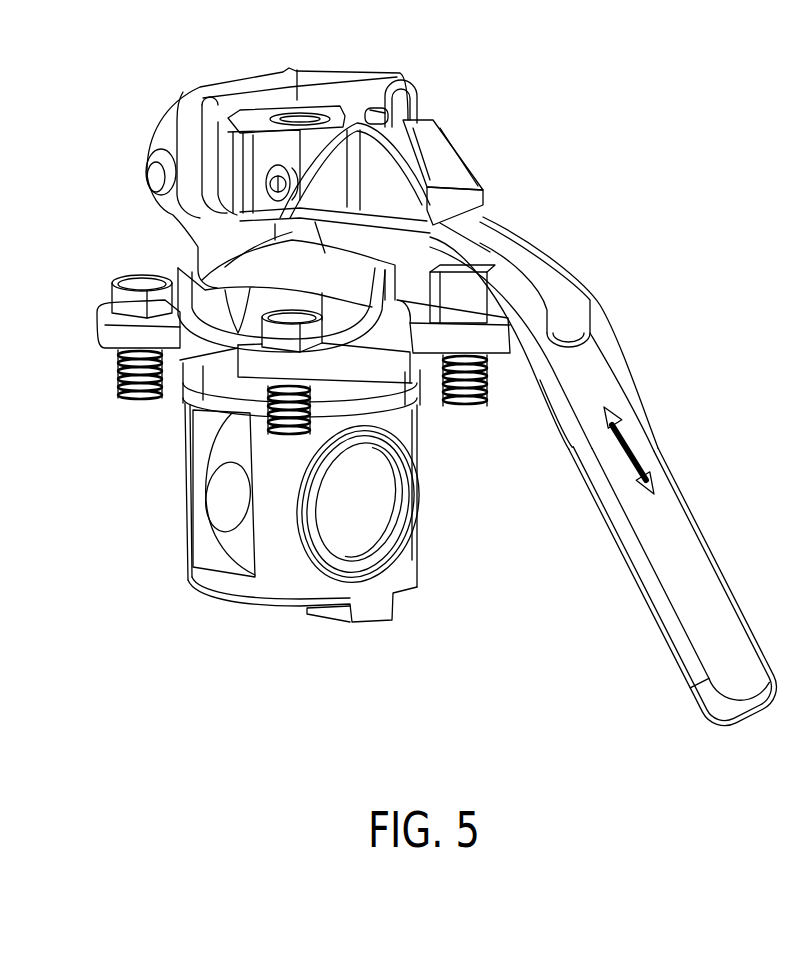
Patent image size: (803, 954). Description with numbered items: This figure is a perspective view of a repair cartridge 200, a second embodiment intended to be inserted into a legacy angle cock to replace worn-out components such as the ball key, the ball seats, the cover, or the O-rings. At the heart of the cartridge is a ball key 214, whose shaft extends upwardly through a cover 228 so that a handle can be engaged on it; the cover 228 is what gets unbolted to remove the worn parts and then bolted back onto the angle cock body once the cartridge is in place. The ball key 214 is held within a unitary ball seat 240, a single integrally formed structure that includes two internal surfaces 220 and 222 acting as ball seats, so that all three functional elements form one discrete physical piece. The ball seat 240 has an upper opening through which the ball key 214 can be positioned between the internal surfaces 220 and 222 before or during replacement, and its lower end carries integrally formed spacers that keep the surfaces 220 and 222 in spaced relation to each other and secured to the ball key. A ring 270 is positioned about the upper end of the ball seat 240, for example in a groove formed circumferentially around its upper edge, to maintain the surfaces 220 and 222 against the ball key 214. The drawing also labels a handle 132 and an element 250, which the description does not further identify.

The repair cartridge 200 is at (612, 103).
The handle 132 is at (630, 570).
The internal surface 220 is at (183, 490).
The ball key 214 is at (232, 540).
The internal surface 222 is at (420, 502).
The unitary ball seat 240 is at (418, 553).
The housing rim 250 is at (423, 408).
The ring 270 is at (183, 380).
The cover 228 is at (97, 330).